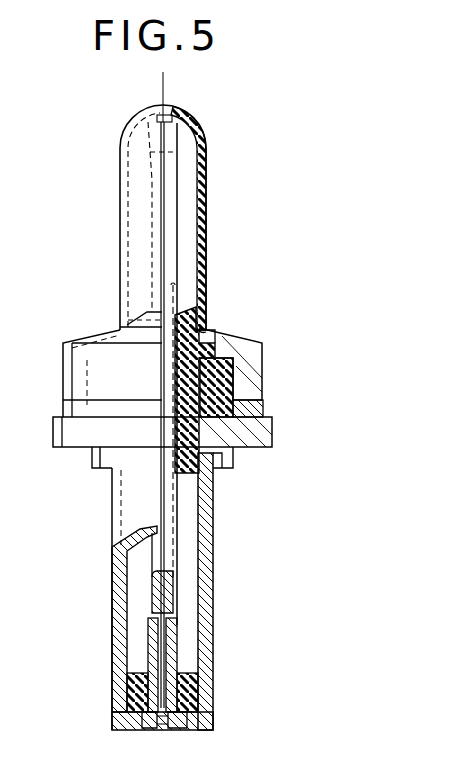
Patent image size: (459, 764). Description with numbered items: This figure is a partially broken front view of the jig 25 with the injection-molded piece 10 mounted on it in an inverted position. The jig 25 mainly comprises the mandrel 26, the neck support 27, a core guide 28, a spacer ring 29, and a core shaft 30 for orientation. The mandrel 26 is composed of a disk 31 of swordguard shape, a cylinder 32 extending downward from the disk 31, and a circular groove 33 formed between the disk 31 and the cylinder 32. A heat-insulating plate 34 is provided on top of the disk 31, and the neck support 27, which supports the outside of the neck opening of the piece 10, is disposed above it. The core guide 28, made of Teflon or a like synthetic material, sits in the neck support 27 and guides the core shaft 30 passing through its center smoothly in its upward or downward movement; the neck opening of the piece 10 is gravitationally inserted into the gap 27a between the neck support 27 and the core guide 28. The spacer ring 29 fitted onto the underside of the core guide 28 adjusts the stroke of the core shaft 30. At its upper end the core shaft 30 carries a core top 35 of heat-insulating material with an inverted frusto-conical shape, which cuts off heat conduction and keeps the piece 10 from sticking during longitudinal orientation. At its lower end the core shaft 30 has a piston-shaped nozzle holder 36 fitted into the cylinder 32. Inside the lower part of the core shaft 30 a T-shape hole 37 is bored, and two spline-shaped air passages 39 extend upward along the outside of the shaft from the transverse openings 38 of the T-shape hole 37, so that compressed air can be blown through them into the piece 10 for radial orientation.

The piece 10 is at (122, 131).
The jig 25 is at (284, 523).
The mandrel 26 is at (112, 498).
The neck support 27 is at (253, 350).
The gap 27a is at (212, 333).
The core guide 28 is at (228, 377).
The spacer ring 29 is at (190, 478).
The core shaft 30 is at (178, 210).
The disk 31 is at (272, 440).
The cylinder 32 is at (212, 592).
The circular groove 33 is at (220, 458).
The heat-insulating plate 34 is at (258, 410).
The core top 35 is at (170, 142).
The nozzle holder 36 is at (187, 707).
The T-shape hole 37 is at (163, 657).
The transverse openings 38 is at (148, 618).
The air passages 39 is at (174, 285).